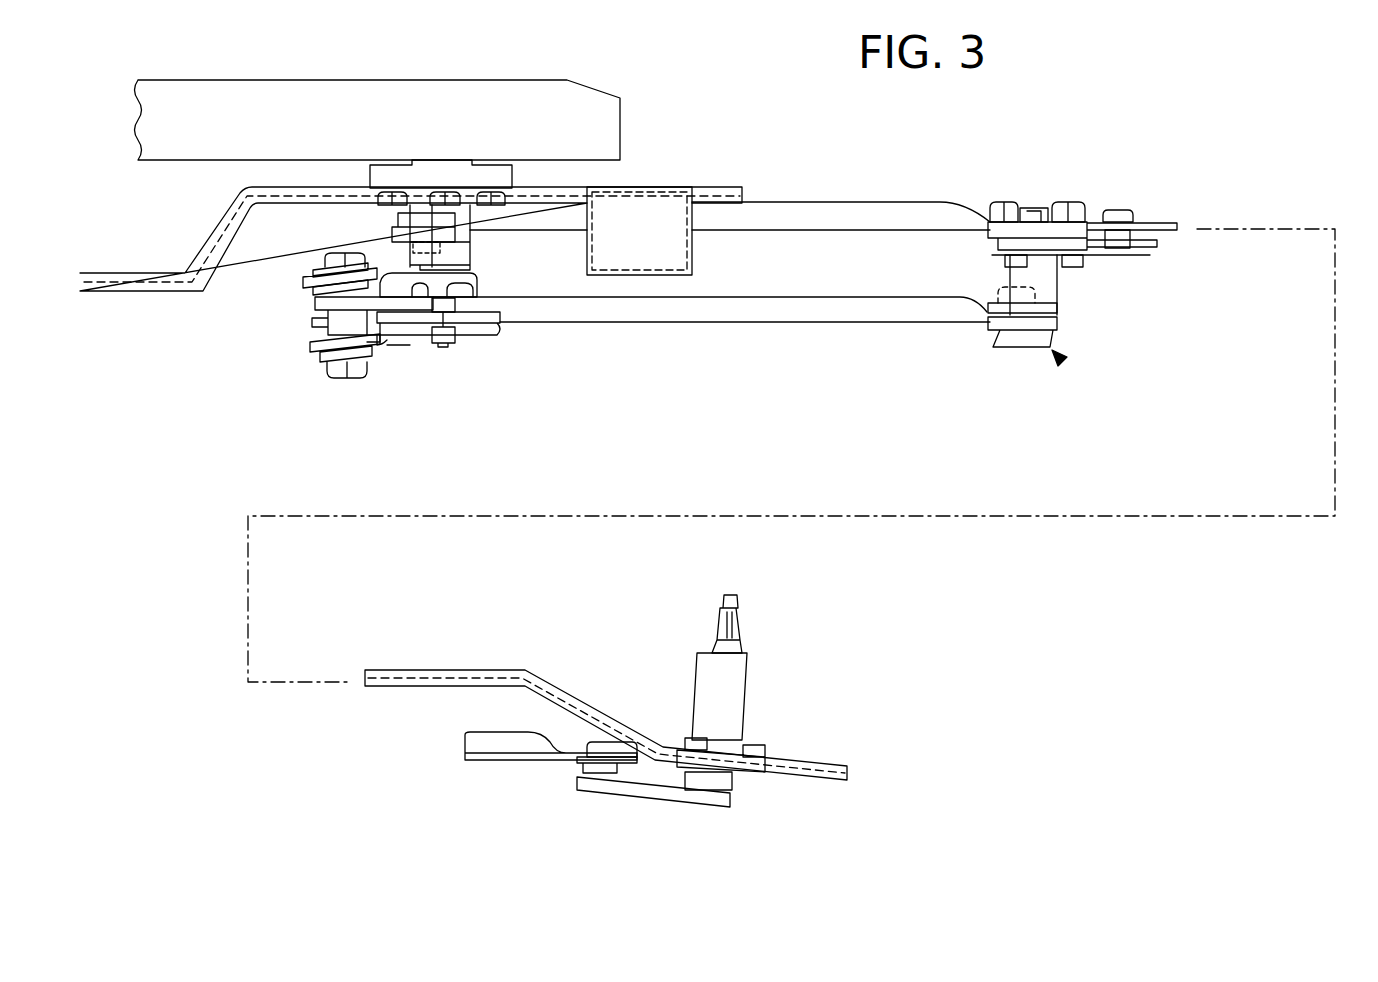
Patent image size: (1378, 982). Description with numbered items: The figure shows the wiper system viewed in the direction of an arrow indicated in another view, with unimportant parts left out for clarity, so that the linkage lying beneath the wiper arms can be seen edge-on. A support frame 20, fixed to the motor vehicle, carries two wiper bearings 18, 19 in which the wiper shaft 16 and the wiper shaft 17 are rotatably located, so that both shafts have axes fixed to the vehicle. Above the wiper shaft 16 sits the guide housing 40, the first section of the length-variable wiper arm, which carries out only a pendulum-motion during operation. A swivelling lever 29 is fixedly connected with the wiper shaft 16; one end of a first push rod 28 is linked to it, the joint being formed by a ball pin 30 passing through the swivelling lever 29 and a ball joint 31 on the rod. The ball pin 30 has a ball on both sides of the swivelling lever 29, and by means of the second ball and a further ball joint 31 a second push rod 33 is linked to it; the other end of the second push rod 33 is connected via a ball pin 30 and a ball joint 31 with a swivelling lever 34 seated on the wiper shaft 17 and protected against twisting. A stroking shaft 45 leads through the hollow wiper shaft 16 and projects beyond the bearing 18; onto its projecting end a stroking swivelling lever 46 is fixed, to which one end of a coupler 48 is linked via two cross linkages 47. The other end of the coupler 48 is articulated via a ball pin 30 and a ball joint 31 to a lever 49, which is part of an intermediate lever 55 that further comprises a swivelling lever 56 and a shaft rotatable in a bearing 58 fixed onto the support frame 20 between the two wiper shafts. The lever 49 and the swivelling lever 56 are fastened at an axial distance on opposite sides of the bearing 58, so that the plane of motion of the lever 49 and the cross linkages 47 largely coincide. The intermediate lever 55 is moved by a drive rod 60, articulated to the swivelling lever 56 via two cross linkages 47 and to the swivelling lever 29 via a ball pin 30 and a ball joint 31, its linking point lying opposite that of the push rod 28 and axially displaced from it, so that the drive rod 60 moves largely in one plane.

The wiper shaft 16 is at (480, 275).
The wiper shaft 17 is at (740, 642).
The wiper bearing 18 is at (469, 244).
The wiper bearing 19 is at (728, 710).
The support frame 20 is at (725, 183).
The first push rod 28 is at (382, 347).
The swivelling lever 29 is at (315, 308).
The ball pin 30 is at (403, 256).
The ball joint 31 is at (403, 213).
The second push rod 33 is at (310, 280).
The swivelling lever 34 is at (642, 797).
The guide housing 40 is at (250, 100).
The stroking shaft 45 is at (503, 308).
The stroking swivelling lever 46 is at (490, 337).
The cross linkages 47 is at (1057, 202).
The coupler 48 is at (797, 313).
The lever 49 is at (1020, 340).
The intermediate lever 55 is at (1062, 362).
The swivelling lever 56 is at (1080, 218).
The bearing 58 is at (1057, 288).
The drive rod 60 is at (817, 215).